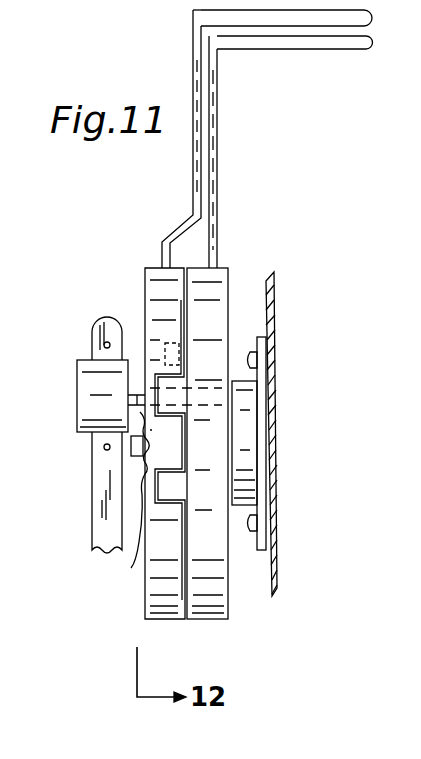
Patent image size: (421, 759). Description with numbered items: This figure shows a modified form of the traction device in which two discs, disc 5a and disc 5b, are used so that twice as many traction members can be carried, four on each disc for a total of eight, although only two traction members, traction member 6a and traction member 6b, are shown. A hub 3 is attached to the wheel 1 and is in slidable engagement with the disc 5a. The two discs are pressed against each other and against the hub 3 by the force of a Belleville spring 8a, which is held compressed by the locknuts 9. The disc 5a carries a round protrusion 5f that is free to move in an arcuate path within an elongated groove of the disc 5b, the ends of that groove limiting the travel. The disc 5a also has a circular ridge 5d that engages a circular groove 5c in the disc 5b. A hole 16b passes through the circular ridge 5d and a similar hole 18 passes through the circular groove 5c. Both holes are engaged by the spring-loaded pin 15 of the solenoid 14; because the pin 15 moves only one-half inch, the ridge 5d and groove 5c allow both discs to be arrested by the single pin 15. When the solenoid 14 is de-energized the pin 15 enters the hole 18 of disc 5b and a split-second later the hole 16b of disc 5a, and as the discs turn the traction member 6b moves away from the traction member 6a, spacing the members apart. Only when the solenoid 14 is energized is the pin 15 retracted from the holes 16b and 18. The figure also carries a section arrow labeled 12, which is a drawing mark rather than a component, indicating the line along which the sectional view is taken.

The automobile wheel 1 is at (277, 522).
The hub 3 is at (244, 380).
The disc 5a is at (210, 619).
The disc 5b is at (172, 619).
The circular groove 5c is at (173, 480).
The circular ridge 5d is at (170, 488).
The round protrusion 5f is at (183, 348).
The traction member 6a is at (213, 135).
The traction member 6b is at (316, 50).
The Belleville spring 8a is at (123, 504).
The locknuts 9 is at (146, 446).
The hanger strip 12 is at (92, 507).
The solenoid 14 is at (78, 364).
The spring-loaded iron pin 15 is at (137, 390).
The hole 16b is at (205, 412).
The hole 18 is at (185, 406).